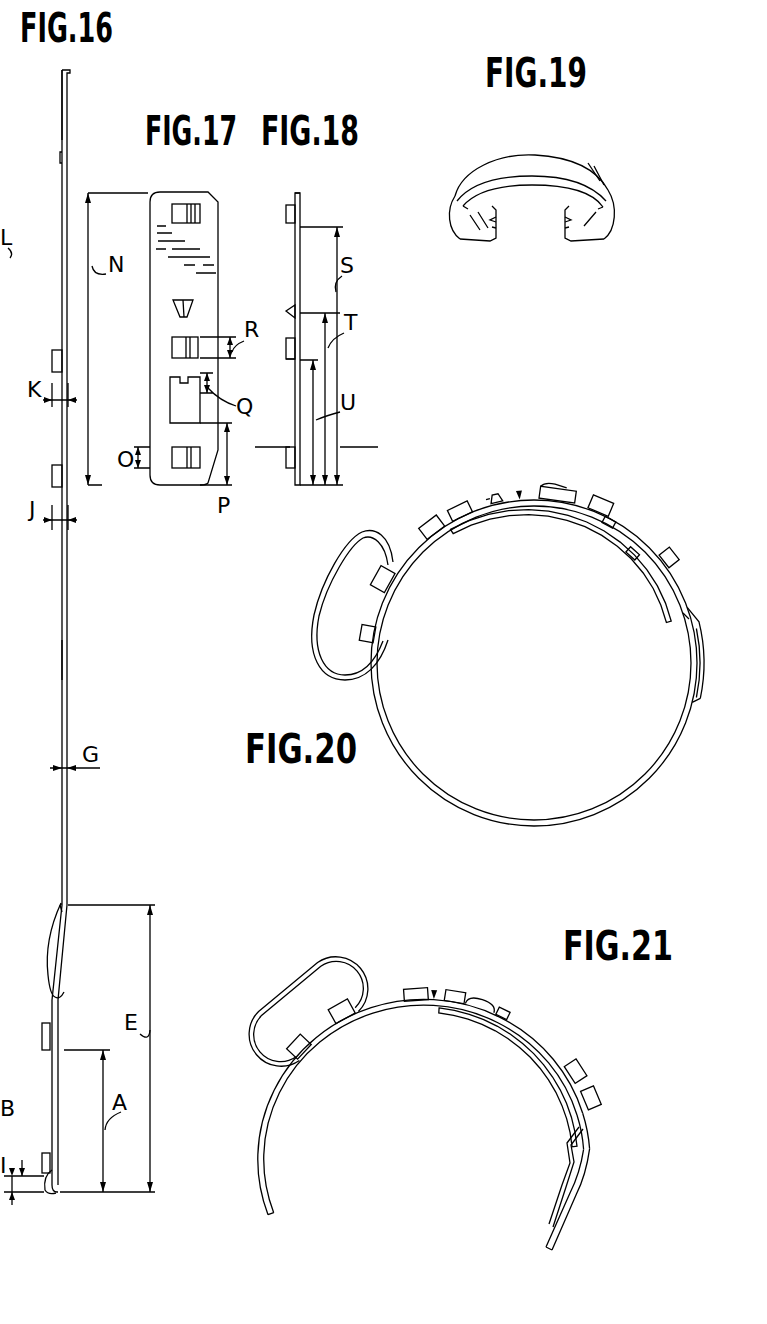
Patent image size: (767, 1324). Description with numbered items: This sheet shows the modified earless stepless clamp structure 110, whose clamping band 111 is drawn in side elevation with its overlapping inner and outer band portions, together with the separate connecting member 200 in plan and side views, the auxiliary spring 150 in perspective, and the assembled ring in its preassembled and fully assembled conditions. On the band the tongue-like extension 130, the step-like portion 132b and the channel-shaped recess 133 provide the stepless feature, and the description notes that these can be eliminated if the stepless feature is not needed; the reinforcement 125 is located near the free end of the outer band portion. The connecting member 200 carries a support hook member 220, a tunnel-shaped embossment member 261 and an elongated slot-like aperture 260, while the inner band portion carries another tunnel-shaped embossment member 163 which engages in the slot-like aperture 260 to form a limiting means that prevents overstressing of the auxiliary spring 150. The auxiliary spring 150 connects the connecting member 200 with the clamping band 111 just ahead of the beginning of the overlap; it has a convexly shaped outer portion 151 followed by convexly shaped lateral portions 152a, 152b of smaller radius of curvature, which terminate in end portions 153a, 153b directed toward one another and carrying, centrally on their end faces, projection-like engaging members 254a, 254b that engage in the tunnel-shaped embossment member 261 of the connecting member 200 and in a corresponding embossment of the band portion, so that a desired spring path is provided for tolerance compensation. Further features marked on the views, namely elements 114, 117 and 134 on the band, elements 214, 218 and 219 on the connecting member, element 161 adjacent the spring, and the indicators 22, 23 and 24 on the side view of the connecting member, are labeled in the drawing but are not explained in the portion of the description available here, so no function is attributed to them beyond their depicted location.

In FIG. 16, the clamp structure 110 is at (60, 613).
In FIG. 20, the clamp structure 110 is at (534, 663).
In FIG. 21, the clamp structure 110 is at (424, 1106).
In FIG. 16, the clamping band 111 is at (58, 668).
In FIG. 16, the lower tab 114 is at (42, 1160).
In FIG. 21, the lower tab 114 is at (510, 985).
In FIG. 16, the tab 117 is at (42, 1042).
In FIG. 20, the tab 117 is at (681, 538).
In FIG. 21, the tab 117 is at (620, 1087).
In FIG. 16, the reinforcement 125 is at (46, 1188).
In FIG. 16, the tongue-like extension 130 is at (62, 110).
In FIG. 20, the tongue-like extension 130 is at (561, 566).
In FIG. 21, the tongue-like extension 130 is at (508, 1077).
In FIG. 16, the step-like portion 132b is at (0, 968).
In FIG. 16, the channel-shaped recess 133 is at (49, 950).
In FIG. 20, the channel-shaped recess 133 is at (658, 654).
In FIG. 21, the channel-shaped recess 133 is at (600, 1188).
In FIG. 16, the fold top 134 is at (59, 906).
In FIG. 19, the auxiliary spring 150 is at (573, 150).
In FIG. 20, the auxiliary spring 150 is at (353, 532).
In FIG. 21, the auxiliary spring 150 is at (291, 974).
In FIG. 19, the convexly shaped outer portion 151 is at (533, 170).
In FIG. 19, the convexly shaped lateral portion 152a is at (454, 198).
In FIG. 19, the convexly shaped lateral portion 152b is at (610, 194).
In FIG. 19, the end portion 153a is at (480, 226).
In FIG. 19, the end portion 153b is at (590, 226).
In FIG. 16, the lower clip tab 161 is at (52, 477).
In FIG. 20, the lower clip tab 161 is at (315, 642).
In FIG. 21, the lower clip tab 161 is at (270, 1047).
In FIG. 16, the tunnel-shaped embossment member 163 is at (52, 361).
In FIG. 20, the tunnel-shaped embossment member 163 is at (415, 500).
In FIG. 21, the tunnel-shaped embossment member 163 is at (414, 966).
In FIG. 17, the connecting member 200 is at (222, 223).
In FIG. 18, the connecting member 200 is at (304, 218).
In FIG. 20, the connecting member 200 is at (524, 451).
In FIG. 21, the connecting member 200 is at (444, 950).
In FIG. 20, the flange 214 is at (568, 467).
In FIG. 17, the middle tab 218 is at (172, 347).
In FIG. 18, the middle tab 218 is at (286, 350).
In FIG. 20, the middle tab 218 is at (451, 483).
In FIG. 21, the middle tab 218 is at (471, 967).
In FIG. 17, the upper tab 219 is at (172, 214).
In FIG. 18, the upper tab 219 is at (286, 214).
In FIG. 20, the upper tab 219 is at (616, 481).
In FIG. 21, the upper tab 219 is at (586, 1053).
In FIG. 17, the support hook member 220 is at (176, 309).
In FIG. 18, the support hook member 220 is at (288, 311).
In FIG. 20, the support hook member 220 is at (491, 467).
In FIG. 18, the reference line 22 is at (263, 426).
In FIG. 18, the top edge 23 is at (287, 192).
In FIG. 18, the tab edge 24 is at (285, 374).
In FIG. 19, the projection-like engaging member 254a is at (499, 240).
In FIG. 19, the projection-like engaging member 254b is at (561, 240).
In FIG. 17, the elongated slot-like aperture 260 is at (182, 410).
In FIG. 17, the tunnel-shaped embossment member 261 is at (180, 466).
In FIG. 18, the tunnel-shaped embossment member 261 is at (286, 461).
In FIG. 20, the tunnel-shaped embossment member 261 is at (325, 579).
In FIG. 21, the tunnel-shaped embossment member 261 is at (351, 969).